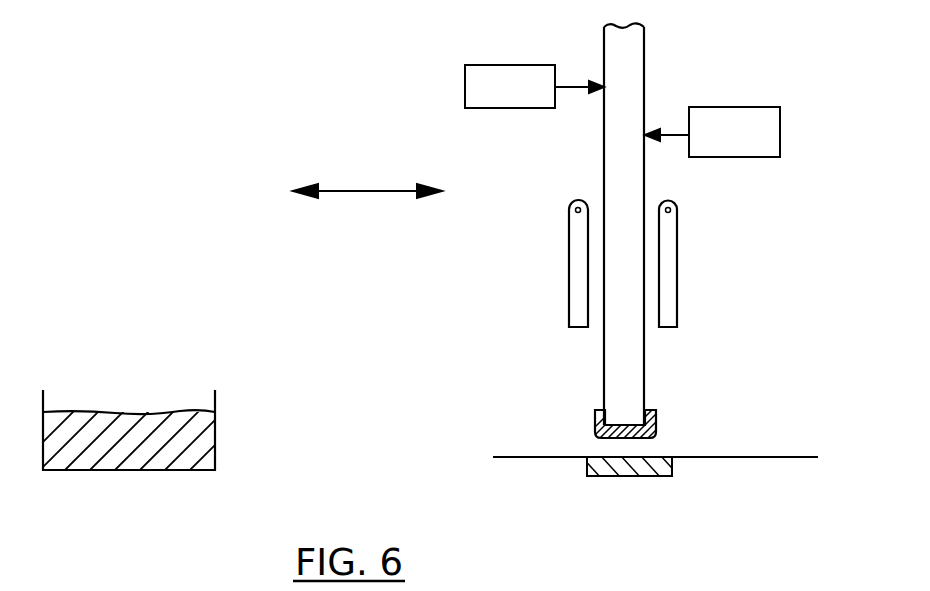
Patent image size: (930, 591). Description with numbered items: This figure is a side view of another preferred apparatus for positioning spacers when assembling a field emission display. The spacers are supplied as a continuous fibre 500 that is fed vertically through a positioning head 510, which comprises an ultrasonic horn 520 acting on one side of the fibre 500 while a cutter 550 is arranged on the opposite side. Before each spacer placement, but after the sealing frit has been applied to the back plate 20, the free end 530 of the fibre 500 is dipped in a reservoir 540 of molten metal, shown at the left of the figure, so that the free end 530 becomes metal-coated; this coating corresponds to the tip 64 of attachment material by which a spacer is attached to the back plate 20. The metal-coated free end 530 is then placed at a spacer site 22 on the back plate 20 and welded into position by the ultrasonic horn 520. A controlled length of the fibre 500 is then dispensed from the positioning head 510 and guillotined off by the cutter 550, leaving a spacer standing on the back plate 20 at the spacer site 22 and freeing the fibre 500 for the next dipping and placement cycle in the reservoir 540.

The continuous fibre 500 is at (645, 58).
The ultrasonic horn 520 is at (536, 98).
The cutter 550 is at (758, 143).
The positioning head 510 is at (569, 278).
The free end 530 is at (624, 425).
The tip of attachment material 64 is at (657, 429).
The back plate 20 is at (816, 492).
The spacer site 22 is at (610, 474).
The reservoir 540 is at (205, 448).